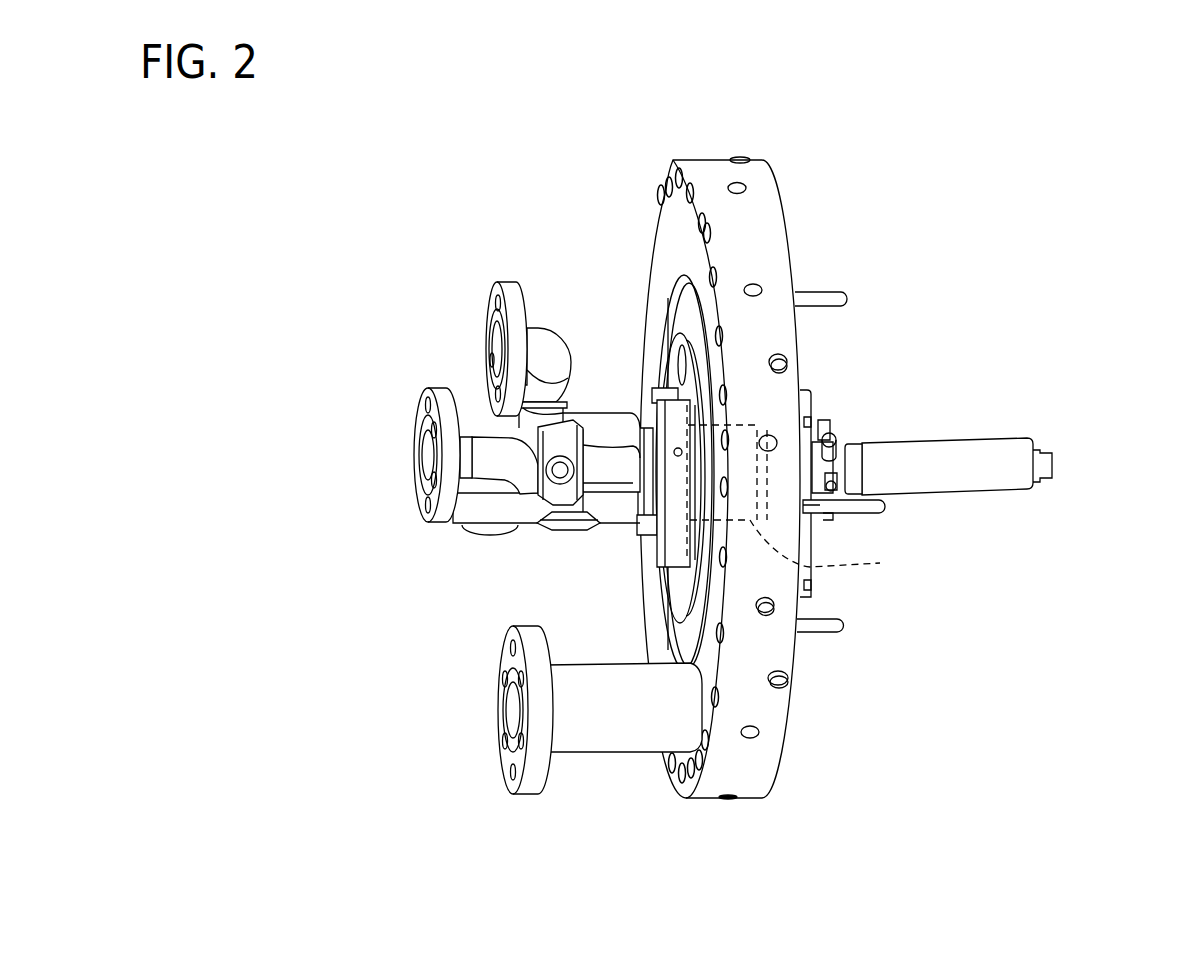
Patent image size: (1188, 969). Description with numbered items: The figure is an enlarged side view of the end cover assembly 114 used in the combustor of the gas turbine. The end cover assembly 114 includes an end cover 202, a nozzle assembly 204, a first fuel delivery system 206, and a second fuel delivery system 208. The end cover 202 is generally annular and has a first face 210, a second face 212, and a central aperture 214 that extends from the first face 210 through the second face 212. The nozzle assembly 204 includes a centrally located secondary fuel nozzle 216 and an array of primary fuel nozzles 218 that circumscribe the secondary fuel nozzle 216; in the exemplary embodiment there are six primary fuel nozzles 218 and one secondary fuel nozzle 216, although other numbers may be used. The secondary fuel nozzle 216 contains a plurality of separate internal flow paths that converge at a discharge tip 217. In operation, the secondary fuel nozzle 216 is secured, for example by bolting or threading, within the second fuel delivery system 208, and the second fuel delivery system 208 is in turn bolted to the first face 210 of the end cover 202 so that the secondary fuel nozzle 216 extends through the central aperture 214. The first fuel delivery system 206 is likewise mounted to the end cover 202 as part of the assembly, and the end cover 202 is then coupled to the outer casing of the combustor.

The end cover assembly 114 is at (342, 240).
The end cover 202 is at (728, 803).
The nozzle assembly 204 is at (881, 593).
The first fuel delivery system 206 is at (573, 780).
The second fuel delivery system 208 is at (527, 543).
The first face 210 is at (665, 252).
The second face 212 is at (786, 236).
The central aperture 214 is at (805, 494).
The secondary fuel nozzle 216 is at (996, 437).
The discharge tip 217 is at (1052, 450).
The primary fuel nozzles 218 is at (812, 537).